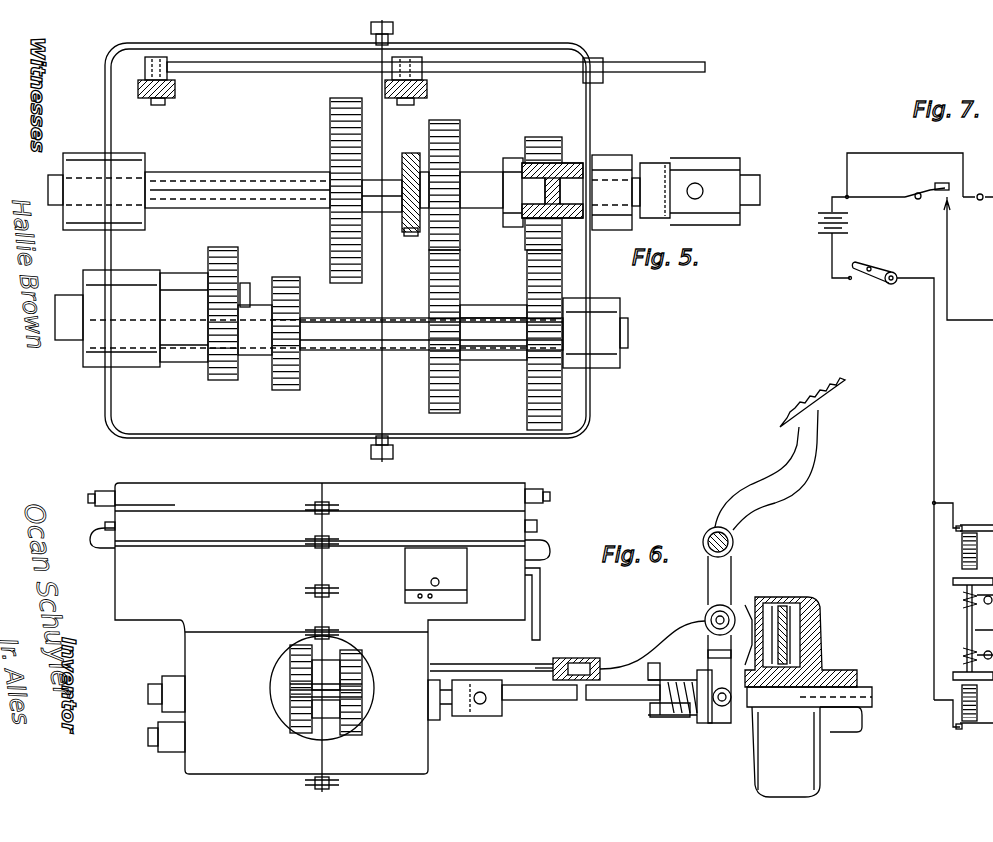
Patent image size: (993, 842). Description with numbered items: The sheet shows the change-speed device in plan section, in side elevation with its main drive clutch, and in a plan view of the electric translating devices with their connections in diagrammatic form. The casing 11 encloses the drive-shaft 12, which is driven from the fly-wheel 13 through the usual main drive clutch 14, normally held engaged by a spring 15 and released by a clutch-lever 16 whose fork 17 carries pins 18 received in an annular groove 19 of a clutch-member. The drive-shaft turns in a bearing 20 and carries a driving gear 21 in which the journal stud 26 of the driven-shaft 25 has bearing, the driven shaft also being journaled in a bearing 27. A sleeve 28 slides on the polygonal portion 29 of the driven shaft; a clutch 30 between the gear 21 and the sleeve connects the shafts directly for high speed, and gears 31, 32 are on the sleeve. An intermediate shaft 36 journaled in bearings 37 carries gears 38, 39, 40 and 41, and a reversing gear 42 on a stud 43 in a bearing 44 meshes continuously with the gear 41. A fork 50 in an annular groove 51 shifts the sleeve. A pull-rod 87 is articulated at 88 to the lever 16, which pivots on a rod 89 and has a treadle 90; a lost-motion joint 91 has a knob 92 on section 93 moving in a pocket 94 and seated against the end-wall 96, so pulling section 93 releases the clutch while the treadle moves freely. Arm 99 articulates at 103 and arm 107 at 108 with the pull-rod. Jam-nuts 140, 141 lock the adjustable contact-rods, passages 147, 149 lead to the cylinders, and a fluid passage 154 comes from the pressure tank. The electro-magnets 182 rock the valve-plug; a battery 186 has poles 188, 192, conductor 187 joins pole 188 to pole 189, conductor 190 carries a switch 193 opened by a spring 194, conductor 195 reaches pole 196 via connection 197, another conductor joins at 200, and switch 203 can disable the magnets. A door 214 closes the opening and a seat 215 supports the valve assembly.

In FIG. 5, the casing 11 is at (98, 399).
In FIG. 6, the casing 11 is at (114, 587).
In FIG. 5, the drive-shaft 12 is at (641, 164).
In FIG. 6, the drive-shaft 12 is at (572, 700).
In FIG. 6, the fly-wheel 13 is at (820, 620).
In FIG. 6, the main drive clutch 14 is at (748, 620).
In FIG. 6, the spring 15 is at (697, 680).
In FIG. 6, the clutch-lever 16 is at (732, 560).
In FIG. 6, the fork 17 is at (728, 672).
In FIG. 6, the pins 18 is at (720, 723).
In FIG. 6, the annular groove 19 is at (700, 732).
In FIG. 5, the bearing 20 is at (600, 156).
In FIG. 6, the bearing 20 is at (448, 716).
In FIG. 5, the driving gear 21 is at (542, 137).
In FIG. 5, the driven-shaft 25 is at (234, 164).
In FIG. 6, the driven-shaft 25 is at (152, 688).
In FIG. 5, the journal stud 26 is at (522, 216).
In FIG. 5, the bearing 27 is at (136, 216).
In FIG. 6, the bearing 27 is at (170, 677).
In FIG. 5, the sleeve 28 is at (372, 216).
In FIG. 6, the sleeve 28 is at (322, 728).
In FIG. 5, the portion of the driven shaft 29 is at (287, 208).
In FIG. 5, the clutch 30 is at (522, 168).
In FIG. 5, the gear 31 is at (448, 120).
In FIG. 5, the gear 32 is at (330, 119).
In FIG. 6, the gear 32 is at (303, 733).
In FIG. 5, the intermediate shaft 36 is at (354, 348).
In FIG. 6, the intermediate shaft 36 is at (158, 705).
In FIG. 5, the bearings 37 is at (142, 355).
In FIG. 6, the bearings 37 is at (185, 695).
In FIG. 5, the gear 38 is at (533, 393).
In FIG. 5, the gear 39 is at (452, 385).
In FIG. 6, the gear 39 is at (360, 718).
In FIG. 5, the gear 40 is at (290, 391).
In FIG. 6, the gear 40 is at (280, 697).
In FIG. 5, the gear 41 is at (223, 381).
In FIG. 5, the reversing gear 42 is at (238, 251).
In FIG. 5, the stud 43 is at (248, 285).
In FIG. 6, the stud 43 is at (155, 744).
In FIG. 5, the bearing 44 is at (135, 272).
In FIG. 6, the bearing 44 is at (178, 752).
In FIG. 5, the fork 50 is at (411, 236).
In FIG. 6, the fork 50 is at (362, 664).
In FIG. 5, the annular groove 51 is at (410, 153).
In FIG. 6, the annular groove 51 is at (345, 725).
In FIG. 5, the pull-rod 87 is at (278, 72).
In FIG. 6, the pull-rod 87 is at (310, 665).
In FIG. 6, the articulation 88 is at (705, 618).
In FIG. 6, the rod 89 is at (708, 553).
In FIG. 6, the treadle 90 is at (792, 403).
In FIG. 6, the joint 91 is at (592, 660).
In FIG. 6, the knob 92 is at (553, 664).
In FIG. 6, the section of the pull-rod 93 is at (548, 672).
In FIG. 6, the pocket 94 is at (572, 660).
In FIG. 6, the outer end-wall 96 is at (575, 660).
In FIG. 5, the arm 99 is at (176, 90).
In FIG. 5, the articulation 103 is at (158, 105).
In FIG. 5, the arm 107 is at (427, 90).
In FIG. 6, the arm 107 is at (320, 640).
In FIG. 5, the articulation 108 is at (408, 58).
In FIG. 6, the jam-nut 140 is at (96, 506).
In FIG. 6, the jam-nut 141 is at (546, 490).
In FIG. 6, the passage 147 is at (550, 545).
In FIG. 6, the passage 149 is at (98, 545).
In FIG. 6, the fluid passage 154 is at (542, 592).
In FIG. 7, the electro-magnets 182 is at (973, 627).
In FIG. 7, the battery 186 is at (817, 222).
In FIG. 7, the electric conductor 187 is at (930, 378).
In FIG. 7, the pole of the battery 188 is at (832, 243).
In FIG. 7, the pole of the electro-magnets 189 is at (952, 708).
In FIG. 7, the electric conductor 190 is at (874, 198).
In FIG. 7, the pole of the battery 192 is at (830, 210).
In FIG. 7, the electric switch 193 is at (926, 190).
In FIG. 7, the spring 194 is at (924, 203).
In FIG. 7, the electric conductor 195 is at (946, 502).
In FIG. 7, the pole of the electro-magnets 196 is at (970, 322).
In FIG. 7, the connection point 197 is at (932, 502).
In FIG. 7, the connection point 200 is at (846, 195).
In FIG. 7, the electric switch 203 is at (870, 280).
In FIG. 6, the door 214 is at (452, 572).
In FIG. 6, the seat 215 is at (462, 597).